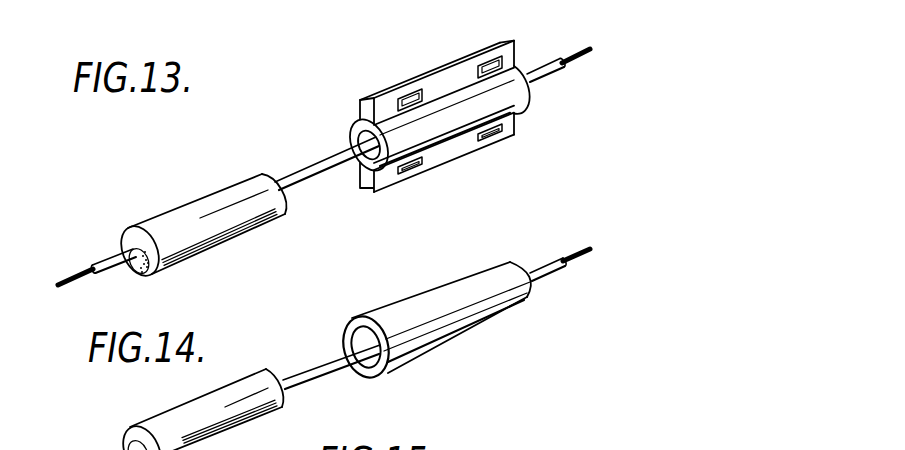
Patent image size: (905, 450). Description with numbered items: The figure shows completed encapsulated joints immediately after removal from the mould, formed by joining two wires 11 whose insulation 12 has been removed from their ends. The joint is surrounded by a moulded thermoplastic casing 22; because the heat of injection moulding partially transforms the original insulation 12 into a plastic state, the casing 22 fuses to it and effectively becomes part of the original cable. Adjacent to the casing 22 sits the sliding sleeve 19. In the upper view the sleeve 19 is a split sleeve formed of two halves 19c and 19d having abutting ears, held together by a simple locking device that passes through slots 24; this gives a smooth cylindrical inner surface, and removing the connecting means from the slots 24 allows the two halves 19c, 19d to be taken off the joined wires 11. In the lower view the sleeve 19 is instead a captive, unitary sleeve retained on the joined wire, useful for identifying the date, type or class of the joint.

In FIG. 13, the wires 11 is at (73, 273).
In FIG. 14, the wires 11 is at (582, 258).
In FIG. 13, the insulation 12 is at (105, 260).
In FIG. 14, the insulation 12 is at (104, 448).
In FIG. 13, the sliding sleeve 19 is at (453, 124).
In FIG. 14, the sliding sleeve 19 is at (380, 315).
In FIG. 13, the sleeve half 19c is at (349, 128).
In FIG. 13, the sleeve half 19d is at (378, 193).
In FIG. 13, the casing 22 is at (191, 210).
In FIG. 14, the casing 22 is at (173, 413).
In FIG. 13, the slots 24 is at (417, 168).